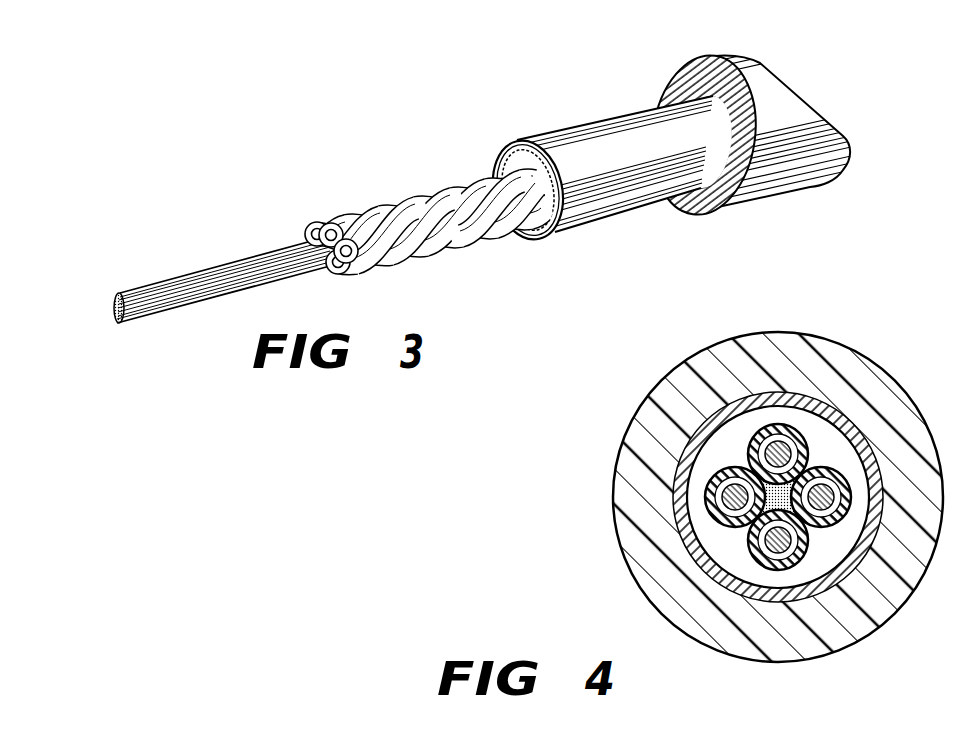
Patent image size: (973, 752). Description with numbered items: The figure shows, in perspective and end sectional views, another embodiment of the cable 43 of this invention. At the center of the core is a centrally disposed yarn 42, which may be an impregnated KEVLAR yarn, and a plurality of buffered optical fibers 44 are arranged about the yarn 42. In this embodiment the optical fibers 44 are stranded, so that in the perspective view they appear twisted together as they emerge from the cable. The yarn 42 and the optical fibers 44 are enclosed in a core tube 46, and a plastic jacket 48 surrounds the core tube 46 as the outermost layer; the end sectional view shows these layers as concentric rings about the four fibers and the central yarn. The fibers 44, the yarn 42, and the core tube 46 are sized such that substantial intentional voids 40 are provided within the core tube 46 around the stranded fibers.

In FIG. 3, the intentional voids 40 is at (522, 231).
In FIG. 4, the intentional voids 40 is at (831, 436).
In FIG. 3, the yarn 42 is at (180, 278).
In FIG. 4, the yarn 42 is at (819, 482).
In FIG. 3, the cable 43 is at (346, 133).
In FIG. 4, the cable 43 is at (826, 318).
In FIG. 3, the buffered optical fibers 44 is at (420, 243).
In FIG. 4, the buffered optical fibers 44 is at (717, 514).
In FIG. 3, the core tube 46 is at (590, 214).
In FIG. 4, the core tube 46 is at (689, 542).
In FIG. 3, the plastic jacket 48 is at (663, 82).
In FIG. 4, the plastic jacket 48 is at (918, 438).